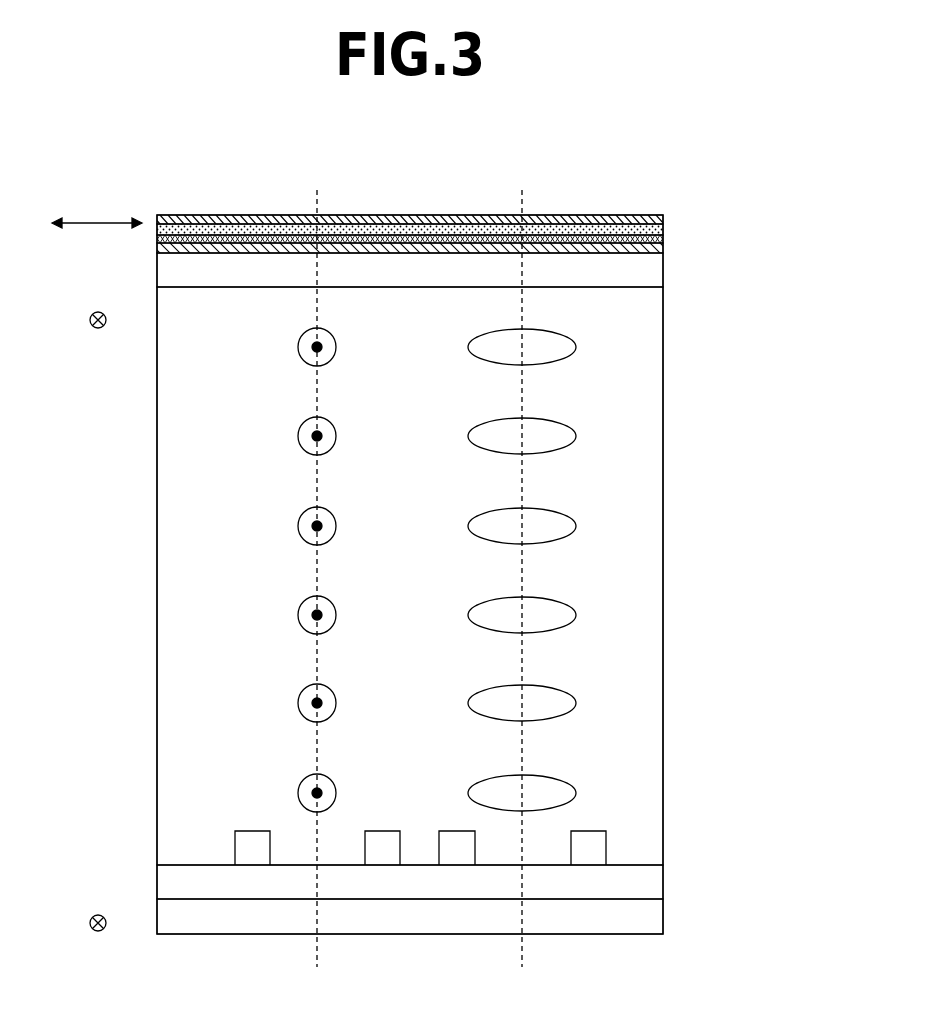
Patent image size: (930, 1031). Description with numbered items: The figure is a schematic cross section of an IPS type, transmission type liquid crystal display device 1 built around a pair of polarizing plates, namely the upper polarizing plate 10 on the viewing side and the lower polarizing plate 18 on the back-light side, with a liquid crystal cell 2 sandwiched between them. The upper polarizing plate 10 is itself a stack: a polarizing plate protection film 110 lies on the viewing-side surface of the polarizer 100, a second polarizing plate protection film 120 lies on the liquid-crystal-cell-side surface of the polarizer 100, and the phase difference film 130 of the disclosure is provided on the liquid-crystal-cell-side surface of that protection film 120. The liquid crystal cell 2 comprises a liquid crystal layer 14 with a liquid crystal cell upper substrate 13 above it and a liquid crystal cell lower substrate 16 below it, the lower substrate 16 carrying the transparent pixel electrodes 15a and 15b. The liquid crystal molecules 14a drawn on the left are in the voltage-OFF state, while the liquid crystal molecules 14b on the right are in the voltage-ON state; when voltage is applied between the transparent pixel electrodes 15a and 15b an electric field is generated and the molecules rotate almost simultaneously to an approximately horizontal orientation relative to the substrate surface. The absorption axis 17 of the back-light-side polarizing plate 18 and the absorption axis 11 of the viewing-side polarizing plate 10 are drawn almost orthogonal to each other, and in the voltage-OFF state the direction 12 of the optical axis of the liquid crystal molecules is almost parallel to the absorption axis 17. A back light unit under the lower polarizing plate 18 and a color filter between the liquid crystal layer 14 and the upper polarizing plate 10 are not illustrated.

The liquid crystal display device 1 is at (637, 148).
The liquid crystal cell 2 is at (755, 293).
The upper polarizing plate 10 is at (778, 192).
The absorption axis 11 is at (102, 222).
The direction of the optical axis of liquid crystal molecules 12 is at (89, 320).
The liquid crystal cell upper substrate 13 is at (653, 270).
The liquid crystal layer 14 is at (653, 482).
The liquid crystal molecules 14a is at (305, 440).
The liquid crystal molecules 14b is at (558, 435).
The transparent pixel electrode 15a is at (588, 838).
The transparent pixel electrode 15b is at (247, 853).
The liquid crystal cell lower substrate 16 is at (652, 882).
The absorption axis 17 is at (89, 923).
The lower polarizing plate 18 is at (652, 915).
The polarizer 100 is at (665, 229).
The polarizing plate protection film 110 is at (665, 218).
The polarizing plate protection film 120 is at (665, 239).
The phase difference film 130 is at (665, 248).